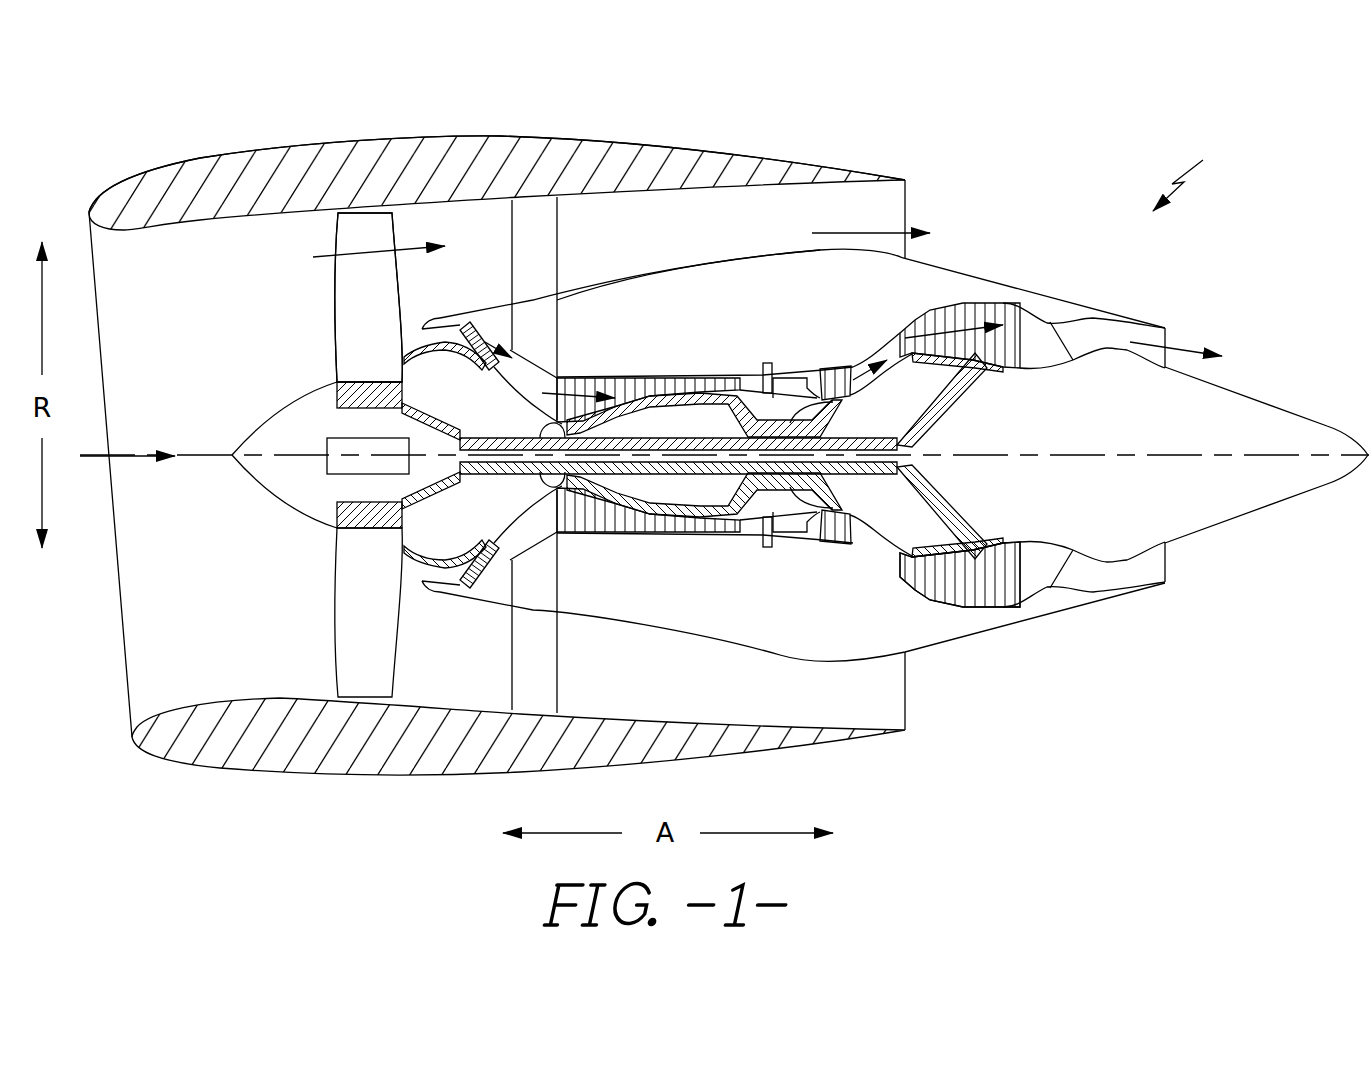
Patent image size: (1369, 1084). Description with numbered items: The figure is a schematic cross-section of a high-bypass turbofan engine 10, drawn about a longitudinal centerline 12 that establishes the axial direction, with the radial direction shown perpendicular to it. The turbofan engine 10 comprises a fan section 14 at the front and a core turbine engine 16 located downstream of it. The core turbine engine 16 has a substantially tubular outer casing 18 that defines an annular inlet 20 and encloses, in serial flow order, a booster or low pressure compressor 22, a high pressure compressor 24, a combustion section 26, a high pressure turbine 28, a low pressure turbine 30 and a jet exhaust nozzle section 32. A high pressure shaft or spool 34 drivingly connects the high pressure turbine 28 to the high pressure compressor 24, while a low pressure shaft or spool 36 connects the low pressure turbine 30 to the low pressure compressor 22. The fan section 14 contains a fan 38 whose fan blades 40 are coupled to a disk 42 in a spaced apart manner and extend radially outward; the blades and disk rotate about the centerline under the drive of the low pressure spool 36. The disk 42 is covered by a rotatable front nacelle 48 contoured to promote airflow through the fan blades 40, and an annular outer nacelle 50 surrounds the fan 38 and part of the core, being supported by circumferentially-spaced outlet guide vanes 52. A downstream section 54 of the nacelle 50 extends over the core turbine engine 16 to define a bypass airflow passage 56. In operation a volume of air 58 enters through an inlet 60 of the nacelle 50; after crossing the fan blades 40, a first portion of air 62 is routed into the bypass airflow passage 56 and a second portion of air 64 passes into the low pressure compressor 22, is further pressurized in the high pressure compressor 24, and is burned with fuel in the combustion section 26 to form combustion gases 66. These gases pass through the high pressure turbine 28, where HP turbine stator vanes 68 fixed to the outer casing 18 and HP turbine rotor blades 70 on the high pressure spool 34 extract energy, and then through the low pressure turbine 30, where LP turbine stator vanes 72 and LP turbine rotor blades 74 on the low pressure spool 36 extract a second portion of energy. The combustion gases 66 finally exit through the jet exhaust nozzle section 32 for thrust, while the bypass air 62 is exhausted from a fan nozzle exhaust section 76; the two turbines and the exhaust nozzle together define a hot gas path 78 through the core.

The turbofan engine 10 is at (1194, 173).
The longitudinal centerline 12 is at (1075, 450).
The fan section 14 is at (418, 120).
The core turbine engine 16 is at (725, 328).
The outer casing 18 is at (752, 650).
The annular inlet 20 is at (457, 578).
The low pressure compressor 22 is at (512, 556).
The high pressure compressor 24 is at (590, 533).
The combustion section 26 is at (787, 532).
The high pressure turbine 28 is at (858, 537).
The low pressure turbine 30 is at (1003, 608).
The jet exhaust nozzle section 32 is at (1168, 338).
The high pressure shaft or spool 34 is at (840, 402).
The low pressure shaft or spool 36 is at (510, 438).
The fan 38 is at (320, 300).
The fan blades 40 is at (333, 643).
The disk 42 is at (336, 392).
The rotatable front nacelle 48 is at (258, 428).
The outer nacelle 50 is at (405, 773).
The outlet guide vanes 52 is at (557, 220).
The downstream section of the nacelle 54 is at (718, 150).
The bypass airflow passage 56 is at (677, 243).
The volume of air 58 is at (123, 453).
The inlet 60 is at (128, 686).
The first portion of air 62 is at (348, 250).
The second portion of air 64 is at (422, 330).
The combustion gases 66 is at (950, 303).
The HP turbine stator vanes 68 is at (827, 542).
The HP turbine rotor blades 70 is at (837, 538).
The LP turbine stator vanes 72 is at (917, 582).
The LP turbine rotor blades 74 is at (928, 588).
The fan nozzle exhaust section 76 is at (906, 205).
The hot gas path 78 is at (893, 338).